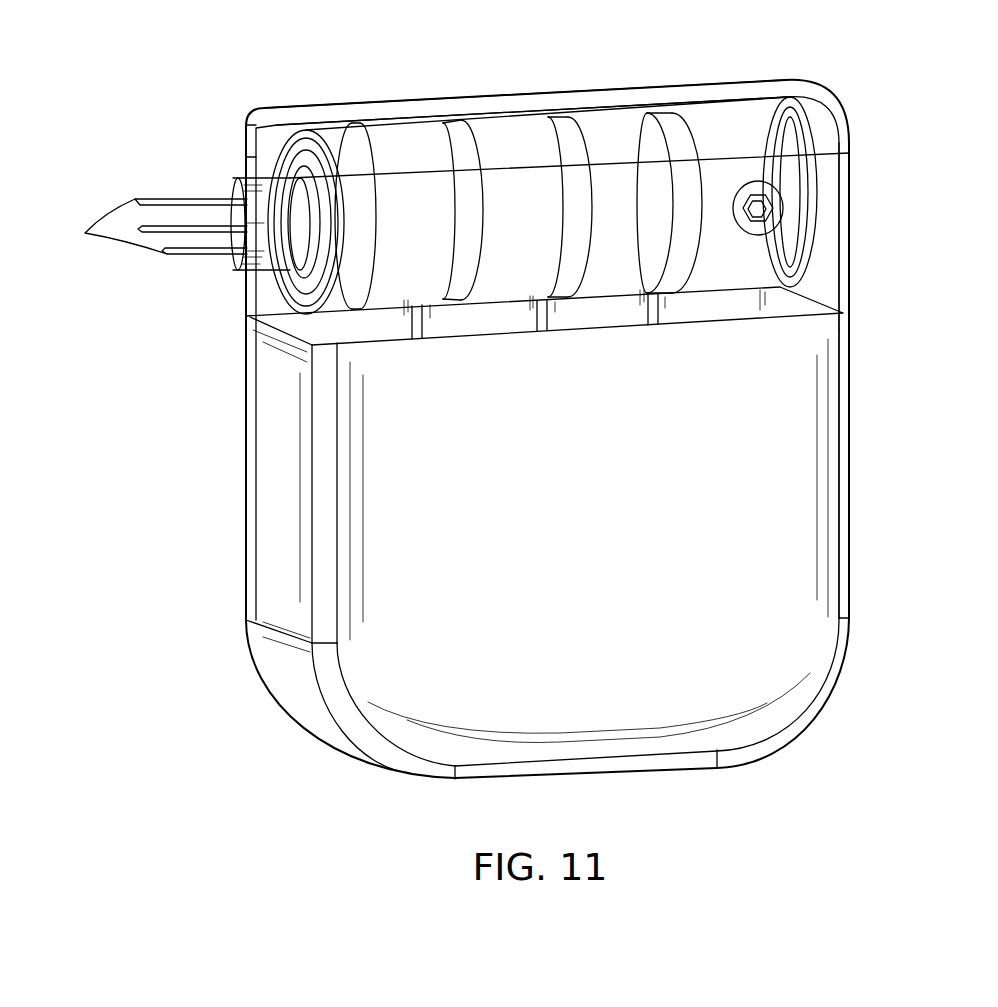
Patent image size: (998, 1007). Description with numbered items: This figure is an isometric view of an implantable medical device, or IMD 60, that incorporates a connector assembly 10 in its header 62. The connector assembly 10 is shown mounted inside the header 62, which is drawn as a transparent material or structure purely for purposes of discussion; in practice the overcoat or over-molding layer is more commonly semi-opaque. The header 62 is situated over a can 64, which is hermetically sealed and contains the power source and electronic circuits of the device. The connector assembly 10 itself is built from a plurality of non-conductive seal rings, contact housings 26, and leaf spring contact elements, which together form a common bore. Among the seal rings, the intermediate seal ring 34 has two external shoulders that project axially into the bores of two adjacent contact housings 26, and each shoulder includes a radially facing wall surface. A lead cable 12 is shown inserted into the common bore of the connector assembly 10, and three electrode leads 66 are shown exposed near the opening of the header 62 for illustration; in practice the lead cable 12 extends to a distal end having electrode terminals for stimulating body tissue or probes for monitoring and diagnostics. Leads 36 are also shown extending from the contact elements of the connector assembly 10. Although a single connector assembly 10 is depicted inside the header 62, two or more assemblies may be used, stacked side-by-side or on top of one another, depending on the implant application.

The connector assembly 10 is at (748, 126).
The lead cable 12 is at (236, 163).
The contact housing 26 is at (376, 150).
The intermediate seal ring 34 is at (446, 140).
The leads 36 is at (430, 314).
The IMD 60 is at (915, 392).
The header 62 is at (830, 242).
The can 64 is at (828, 500).
The electrode leads 66 is at (85, 233).